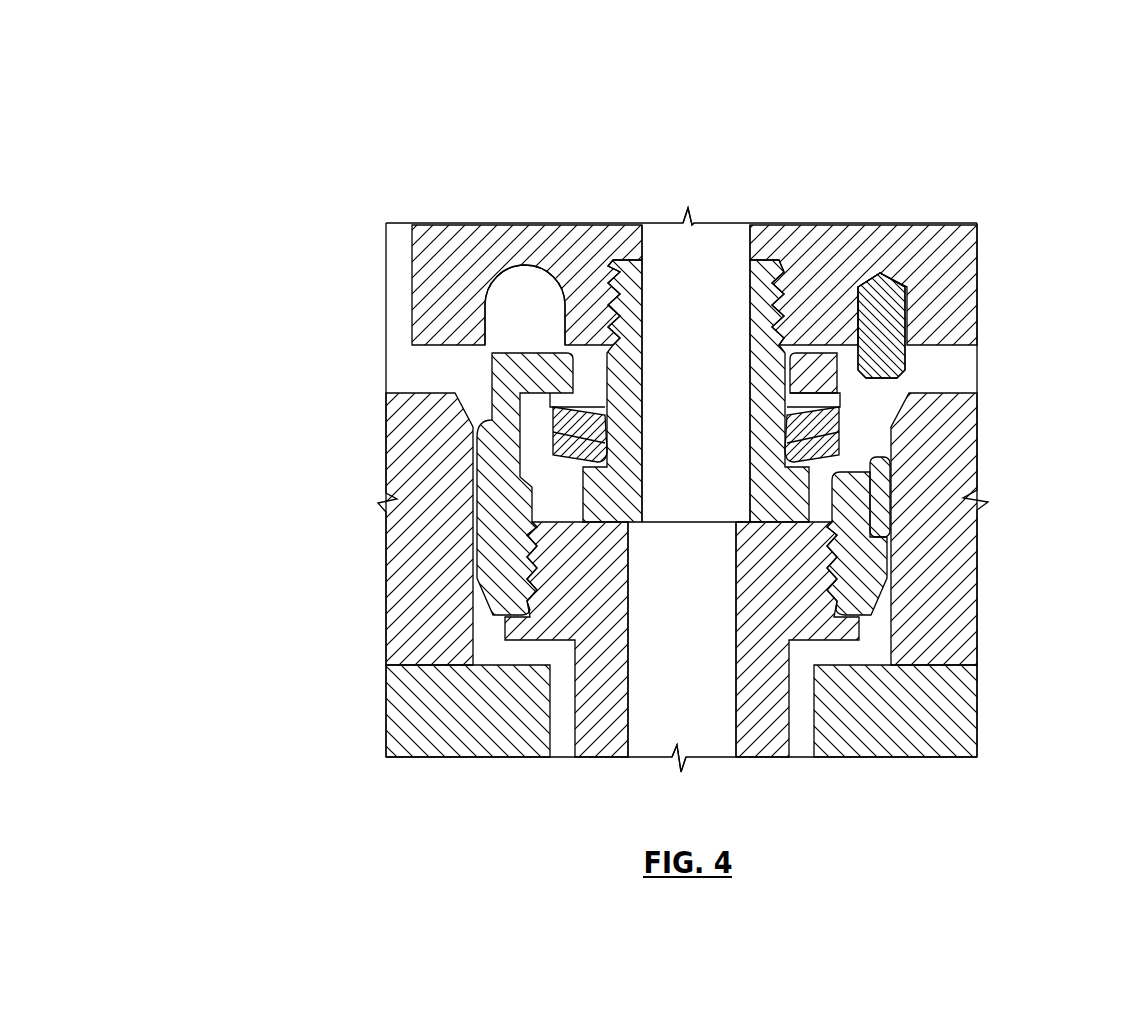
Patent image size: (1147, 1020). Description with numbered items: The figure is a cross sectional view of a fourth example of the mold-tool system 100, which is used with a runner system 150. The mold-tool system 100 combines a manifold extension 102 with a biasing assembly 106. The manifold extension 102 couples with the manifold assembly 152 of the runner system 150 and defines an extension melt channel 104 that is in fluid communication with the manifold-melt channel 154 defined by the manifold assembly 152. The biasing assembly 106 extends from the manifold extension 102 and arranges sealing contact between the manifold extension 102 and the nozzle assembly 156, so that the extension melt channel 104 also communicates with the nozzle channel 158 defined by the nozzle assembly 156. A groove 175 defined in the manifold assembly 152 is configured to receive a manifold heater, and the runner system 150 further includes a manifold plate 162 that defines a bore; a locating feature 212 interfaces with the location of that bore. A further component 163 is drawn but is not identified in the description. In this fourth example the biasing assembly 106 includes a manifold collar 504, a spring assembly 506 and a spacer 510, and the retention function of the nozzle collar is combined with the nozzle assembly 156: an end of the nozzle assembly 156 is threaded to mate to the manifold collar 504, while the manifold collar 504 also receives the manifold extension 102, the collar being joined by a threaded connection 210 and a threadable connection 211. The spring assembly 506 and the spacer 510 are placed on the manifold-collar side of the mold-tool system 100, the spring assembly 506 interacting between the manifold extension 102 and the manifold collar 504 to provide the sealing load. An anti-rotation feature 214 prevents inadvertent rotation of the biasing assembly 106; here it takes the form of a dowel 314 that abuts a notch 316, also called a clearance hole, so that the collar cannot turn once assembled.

The mold-tool system 100 is at (236, 262).
The manifold extension 102 is at (622, 306).
The extension melt channel 104 is at (708, 278).
The biasing assembly 106 is at (298, 315).
The runner system 150 is at (1008, 140).
The manifold assembly 152 is at (945, 237).
The manifold-melt channel 154 is at (662, 226).
The nozzle assembly 156 is at (762, 757).
The nozzle channel 158 is at (650, 708).
The manifold plate 162 is at (967, 635).
The base block 163 is at (957, 722).
The groove 175 is at (525, 288).
The threaded connection 210 is at (888, 568).
The threadable connection 211 is at (783, 306).
The locating feature 212 is at (893, 447).
The anti-rotation feature 214 is at (1028, 276).
The dowel 314 is at (887, 323).
The notch 316 is at (848, 364).
The manifold collar 504 is at (491, 365).
The spring assembly 506 is at (582, 427).
The spacer 510 is at (585, 395).